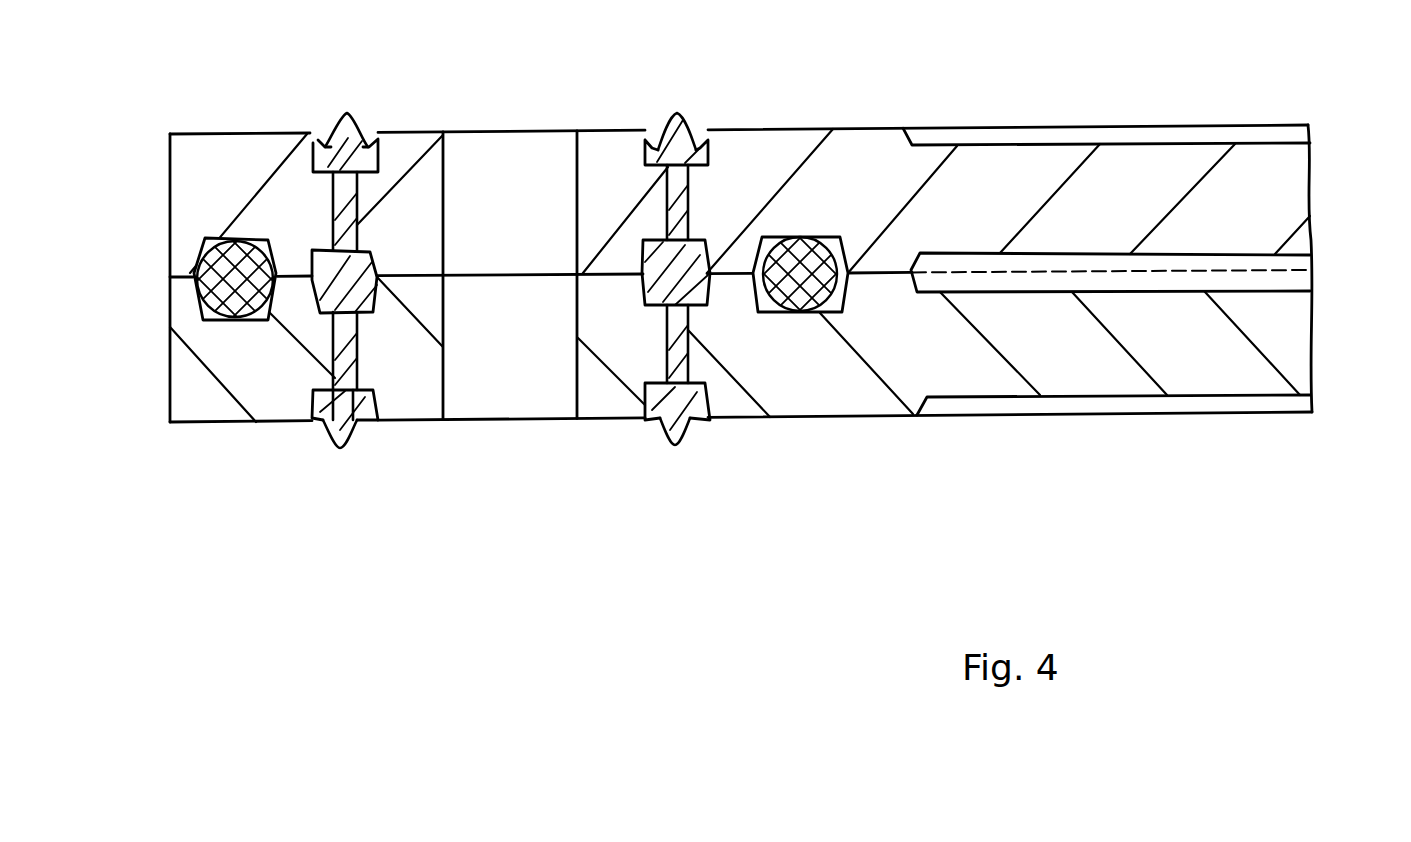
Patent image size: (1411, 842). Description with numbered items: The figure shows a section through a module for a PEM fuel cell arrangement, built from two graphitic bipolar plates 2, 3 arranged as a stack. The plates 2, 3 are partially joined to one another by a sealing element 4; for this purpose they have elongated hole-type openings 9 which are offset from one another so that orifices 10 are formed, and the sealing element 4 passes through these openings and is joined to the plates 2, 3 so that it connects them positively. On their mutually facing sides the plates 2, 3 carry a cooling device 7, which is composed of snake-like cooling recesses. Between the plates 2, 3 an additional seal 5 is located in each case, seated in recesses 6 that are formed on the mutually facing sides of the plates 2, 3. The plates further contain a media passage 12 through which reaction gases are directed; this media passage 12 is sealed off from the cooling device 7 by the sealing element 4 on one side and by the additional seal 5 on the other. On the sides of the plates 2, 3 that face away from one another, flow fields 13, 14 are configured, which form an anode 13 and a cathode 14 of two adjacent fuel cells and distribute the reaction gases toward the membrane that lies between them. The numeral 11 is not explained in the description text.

The plate 2 is at (822, 152).
The plate 3 is at (852, 395).
The sealing element 4 is at (331, 395).
The additional seal 5 is at (228, 270).
The recess 6 is at (768, 270).
The cooling device 7 is at (1220, 278).
The elongated hole-type opening 9 is at (340, 333).
The orifice 10 is at (342, 285).
The upper nut 11 is at (342, 130).
The media passage 12 is at (548, 372).
The flow field (anode) 13 is at (1093, 133).
The flow field (cathode) 14 is at (1130, 405).